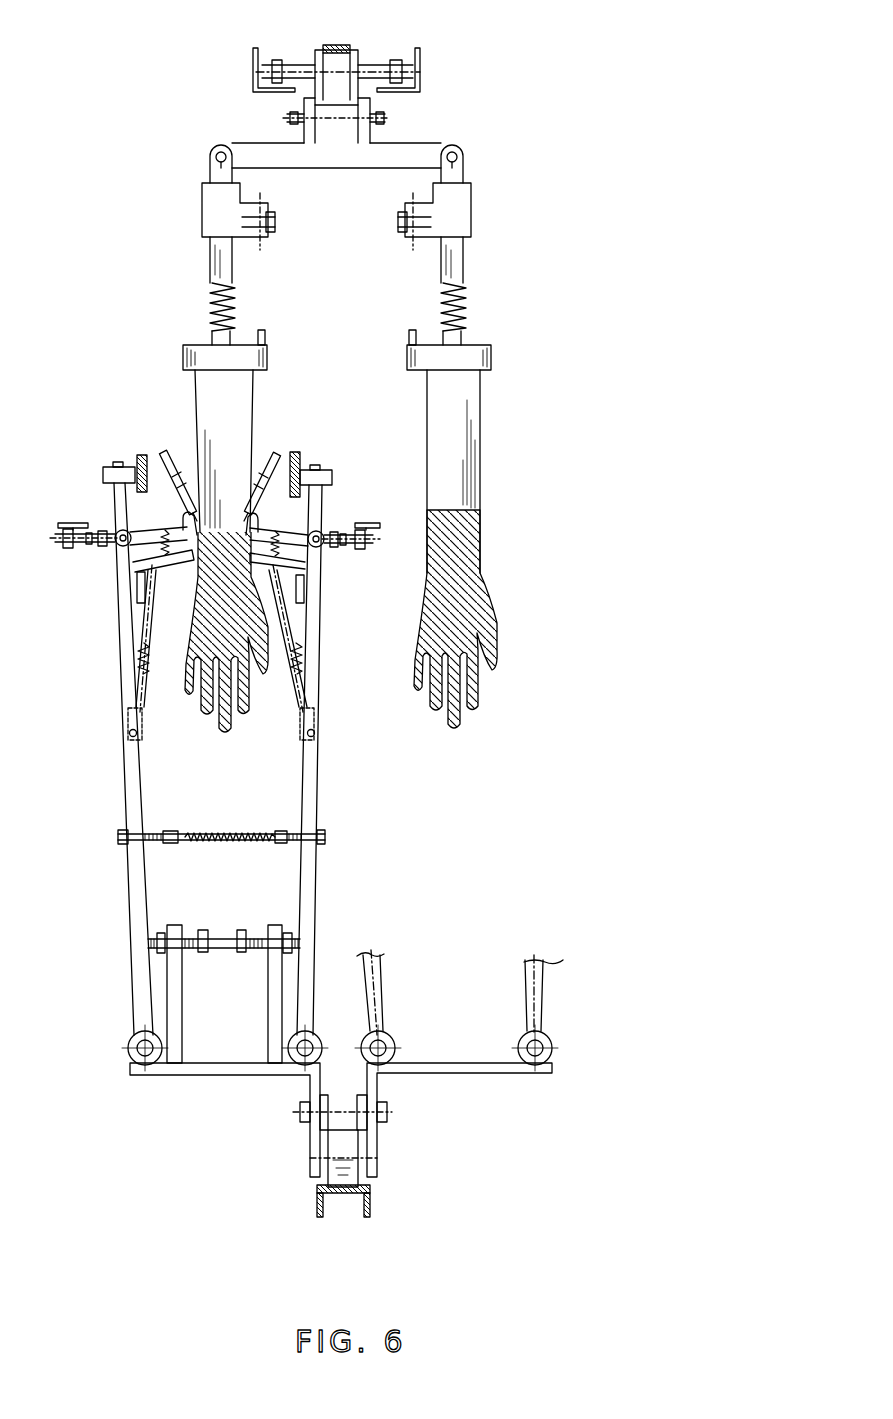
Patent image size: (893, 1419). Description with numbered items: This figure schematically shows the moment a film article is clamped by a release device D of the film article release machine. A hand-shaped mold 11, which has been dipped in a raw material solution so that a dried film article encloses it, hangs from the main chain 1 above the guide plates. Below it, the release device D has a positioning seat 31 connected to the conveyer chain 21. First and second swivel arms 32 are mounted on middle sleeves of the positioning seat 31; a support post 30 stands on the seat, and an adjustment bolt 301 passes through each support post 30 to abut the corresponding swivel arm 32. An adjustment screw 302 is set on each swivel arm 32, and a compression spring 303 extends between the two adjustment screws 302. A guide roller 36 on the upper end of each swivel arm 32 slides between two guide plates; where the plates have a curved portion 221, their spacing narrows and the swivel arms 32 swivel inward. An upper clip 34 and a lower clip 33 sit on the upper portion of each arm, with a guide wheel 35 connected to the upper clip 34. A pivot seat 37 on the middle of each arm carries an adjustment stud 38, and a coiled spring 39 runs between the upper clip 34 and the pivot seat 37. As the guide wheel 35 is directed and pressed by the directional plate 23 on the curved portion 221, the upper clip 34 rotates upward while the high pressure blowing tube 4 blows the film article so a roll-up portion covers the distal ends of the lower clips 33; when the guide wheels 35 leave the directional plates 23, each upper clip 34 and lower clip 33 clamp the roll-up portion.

The main chain 1 is at (350, 44).
The hand-shaped mold 11 is at (198, 391).
The high pressure blowing tube 4 is at (163, 452).
The curved portion 221 is at (140, 455).
The guide roller 36 is at (110, 466).
The swivel arm 32 is at (135, 871).
The directional plate 23 is at (70, 525).
The guide wheel 35 is at (73, 549).
The lower clip 33 is at (130, 558).
The upper clip 34 is at (145, 541).
The coiled spring 39 is at (148, 621).
The adjustment stud 38 is at (138, 693).
The pivot seat 37 is at (140, 739).
The adjustment screw 302 is at (165, 832).
The compression spring 303 is at (225, 834).
The support post 30 is at (172, 925).
The adjustment bolt 301 is at (240, 930).
The positioning seat 31 is at (163, 1077).
The release device D is at (110, 839).
The conveyer chain 21 is at (350, 1156).